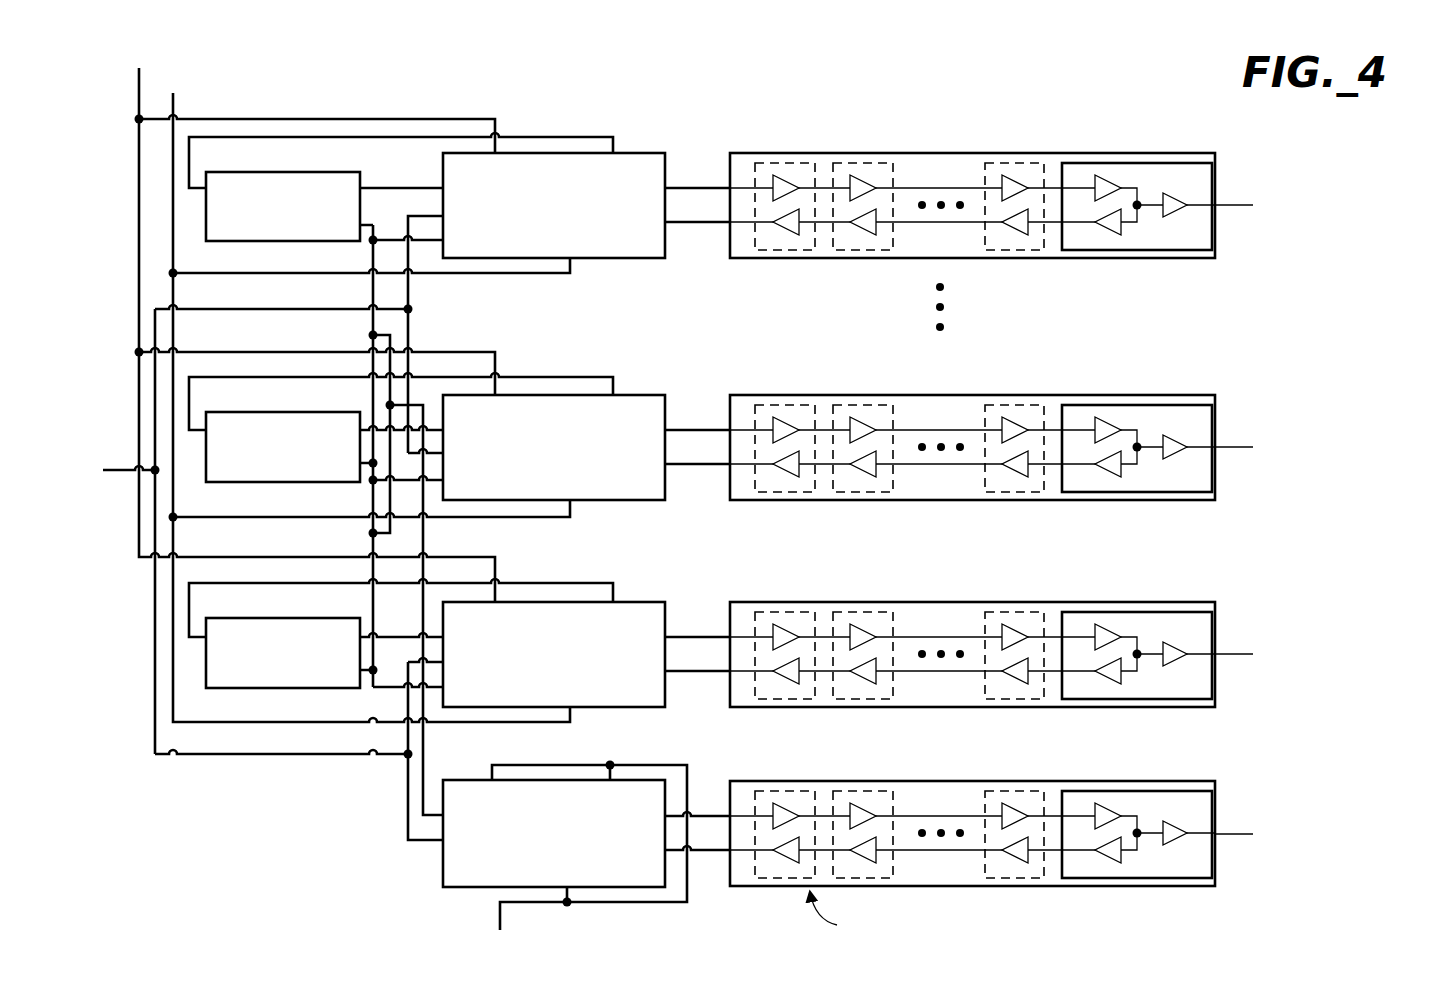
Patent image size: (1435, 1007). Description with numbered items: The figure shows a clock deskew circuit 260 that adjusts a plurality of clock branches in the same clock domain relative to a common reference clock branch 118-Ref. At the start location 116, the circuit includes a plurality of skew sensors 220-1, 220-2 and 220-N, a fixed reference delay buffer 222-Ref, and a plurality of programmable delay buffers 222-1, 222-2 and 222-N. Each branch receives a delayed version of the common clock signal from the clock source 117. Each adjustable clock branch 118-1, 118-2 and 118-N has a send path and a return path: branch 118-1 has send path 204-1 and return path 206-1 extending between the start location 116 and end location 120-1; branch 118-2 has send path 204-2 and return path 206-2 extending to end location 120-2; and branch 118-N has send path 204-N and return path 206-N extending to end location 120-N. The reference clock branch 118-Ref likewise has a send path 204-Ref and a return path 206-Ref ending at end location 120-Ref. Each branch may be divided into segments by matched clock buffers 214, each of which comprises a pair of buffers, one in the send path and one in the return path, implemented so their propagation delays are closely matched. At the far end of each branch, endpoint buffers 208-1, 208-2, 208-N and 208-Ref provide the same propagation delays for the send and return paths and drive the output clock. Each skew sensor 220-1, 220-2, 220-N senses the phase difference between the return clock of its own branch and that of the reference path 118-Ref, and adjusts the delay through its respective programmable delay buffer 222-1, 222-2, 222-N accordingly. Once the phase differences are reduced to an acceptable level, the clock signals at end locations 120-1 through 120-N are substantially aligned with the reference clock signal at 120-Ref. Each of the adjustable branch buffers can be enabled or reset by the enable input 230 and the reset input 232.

The enable input 230 is at (138, 217).
The reset input 232 is at (171, 617).
The clock source 117 is at (122, 480).
The clock deskew circuit 260 is at (206, 770).
The start location 116 is at (352, 790).
The skew sensor 220-N is at (298, 171).
The skew sensor 220-2 is at (298, 411).
The skew sensor 220-1 is at (298, 617).
The programmable delay buffer 222-N is at (655, 152).
The programmable delay buffer 222-2 is at (655, 394).
The programmable delay buffer 222-1 is at (655, 601).
The reference delay buffer 222-Ref is at (438, 868).
The send path 204-N is at (684, 188).
The send path 204-2 is at (682, 430).
The send path 204-1 is at (682, 637).
The send path 204-Ref is at (708, 816).
The return path 206-N is at (690, 226).
The return path 206-2 is at (690, 466).
The return path 206-1 is at (690, 673).
The return path 206-Ref is at (723, 853).
The clock branch 118-N is at (972, 206).
The clock branch 118-2 is at (972, 447).
The clock branch 118-1 is at (972, 653).
The reference clock branch 118-Ref is at (999, 842).
The matched clock buffer 214 is at (911, 225).
The endpoint buffer 208-N is at (1138, 229).
The endpoint buffer 208-2 is at (1138, 471).
The endpoint buffer 208-1 is at (1138, 677).
The endpoint buffer 208-Ref is at (1165, 856).
The end location 120-N is at (1333, 236).
The end location 120-2 is at (1296, 422).
The end location 120-1 is at (1296, 629).
The end location 120-Ref is at (1293, 806).